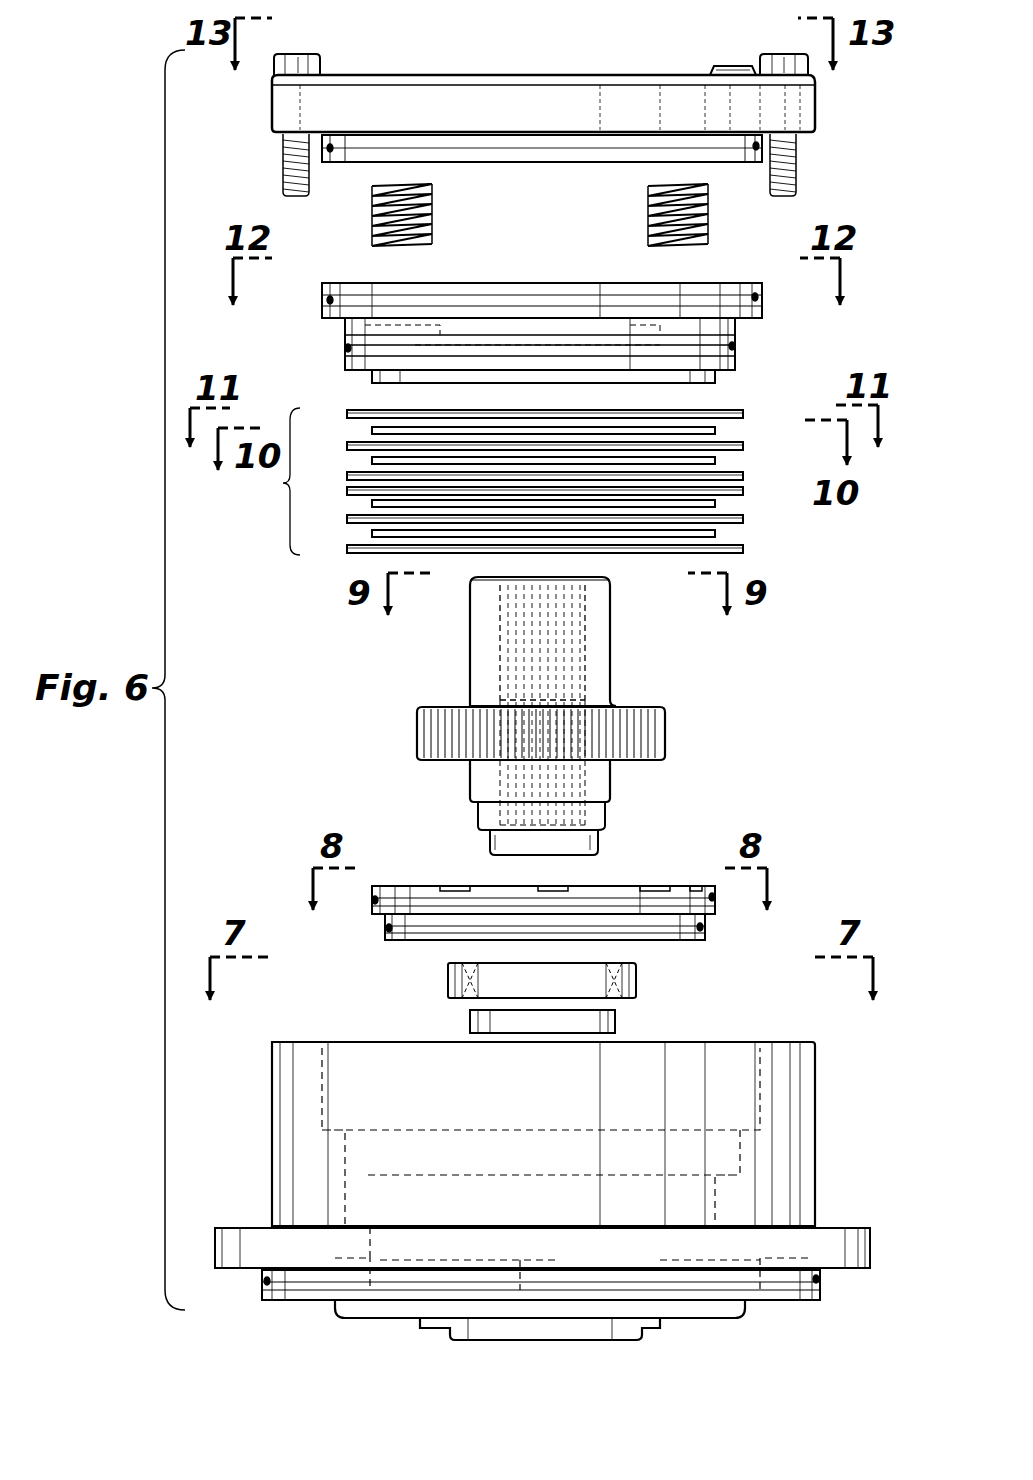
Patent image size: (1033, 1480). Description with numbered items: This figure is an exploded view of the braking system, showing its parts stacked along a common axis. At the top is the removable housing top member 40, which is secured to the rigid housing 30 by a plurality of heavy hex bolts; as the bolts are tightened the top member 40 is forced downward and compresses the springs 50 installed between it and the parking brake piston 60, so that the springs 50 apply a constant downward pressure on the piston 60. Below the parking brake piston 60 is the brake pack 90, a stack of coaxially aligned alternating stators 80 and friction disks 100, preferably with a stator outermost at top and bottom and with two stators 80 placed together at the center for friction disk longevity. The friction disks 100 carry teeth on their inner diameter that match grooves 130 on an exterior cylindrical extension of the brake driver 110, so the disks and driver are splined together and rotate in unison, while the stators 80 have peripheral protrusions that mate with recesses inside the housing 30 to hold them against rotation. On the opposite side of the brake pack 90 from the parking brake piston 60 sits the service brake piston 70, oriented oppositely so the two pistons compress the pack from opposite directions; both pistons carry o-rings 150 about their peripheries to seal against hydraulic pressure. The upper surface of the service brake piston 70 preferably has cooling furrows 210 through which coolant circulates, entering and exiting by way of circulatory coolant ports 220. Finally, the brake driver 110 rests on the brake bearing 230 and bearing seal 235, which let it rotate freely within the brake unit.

The housing 30 is at (790, 1130).
The housing top member 40 is at (512, 90).
The springs 50 is at (435, 217).
The parking brake piston 60 is at (333, 335).
The service brake piston 70 is at (440, 882).
The stators 80 is at (370, 460).
The brake pack 90 is at (532, 481).
The friction disks 100 is at (738, 473).
The brake driver 110 is at (642, 683).
The grooves 130 is at (605, 750).
The o-rings 150 is at (762, 146).
The cooling furrows 210 is at (695, 882).
The circulatory coolant ports 220 is at (735, 68).
The brake bearing 230 is at (636, 970).
The bearing seal 235 is at (615, 1022).